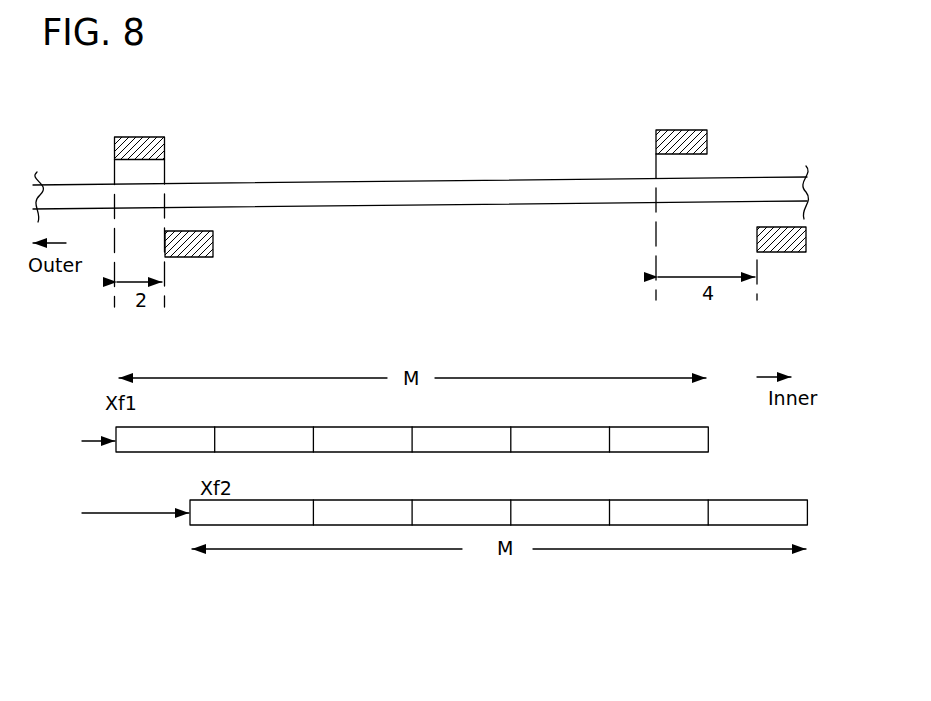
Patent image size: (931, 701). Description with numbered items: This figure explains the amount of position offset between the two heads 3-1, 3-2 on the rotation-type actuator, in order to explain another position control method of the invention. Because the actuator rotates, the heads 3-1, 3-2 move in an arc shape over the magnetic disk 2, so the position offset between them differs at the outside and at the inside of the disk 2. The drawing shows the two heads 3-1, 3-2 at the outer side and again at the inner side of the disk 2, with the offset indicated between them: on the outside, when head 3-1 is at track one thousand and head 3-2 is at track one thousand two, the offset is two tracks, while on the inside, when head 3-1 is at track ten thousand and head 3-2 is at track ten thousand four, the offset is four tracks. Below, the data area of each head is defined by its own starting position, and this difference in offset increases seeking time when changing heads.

The magnetic disk 2 is at (776, 178).
The head 3-1 is at (142, 137).
The head 3-2 is at (197, 257).